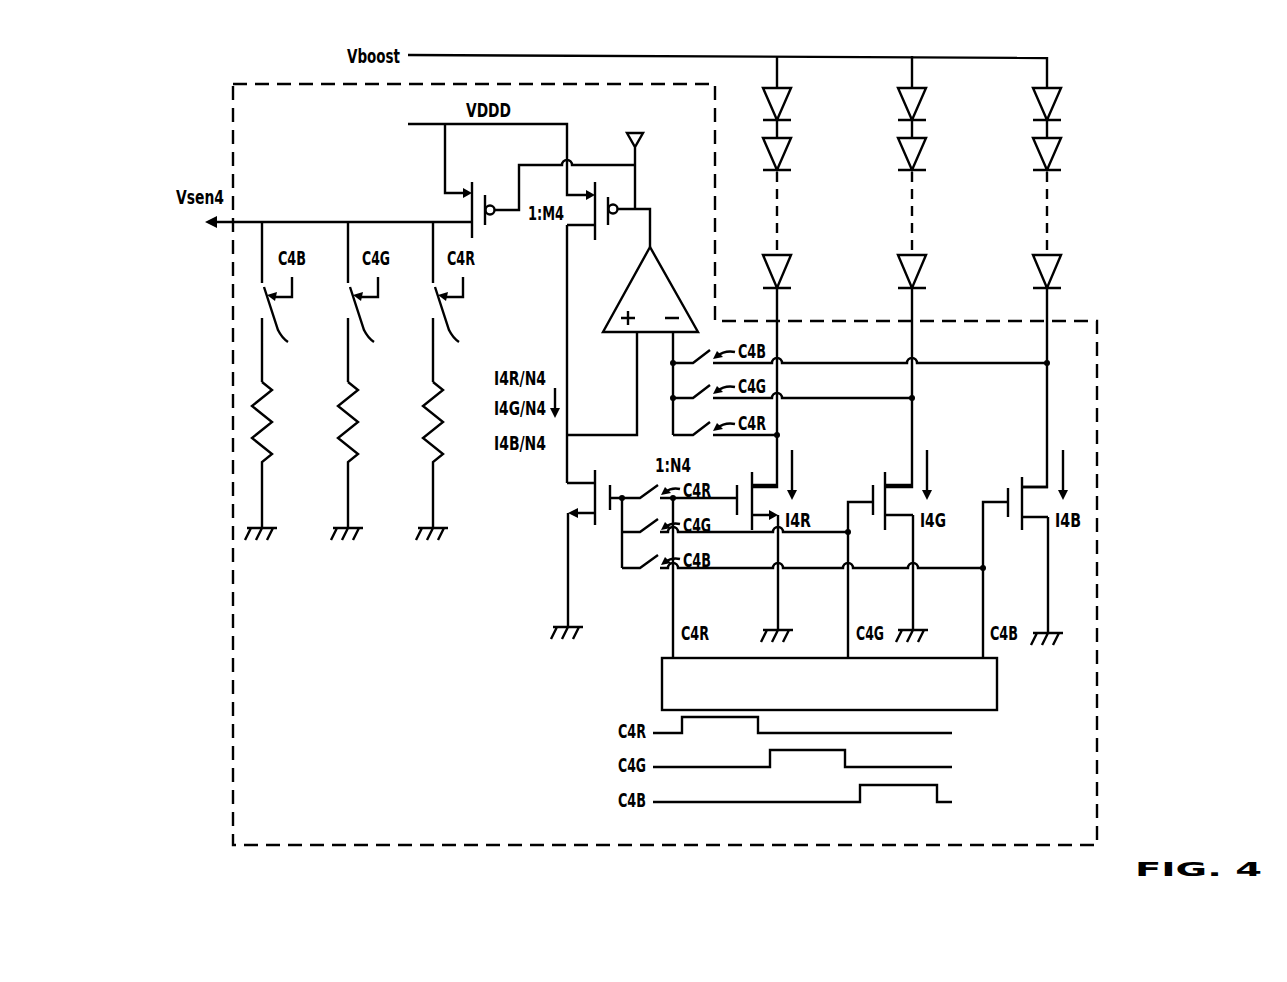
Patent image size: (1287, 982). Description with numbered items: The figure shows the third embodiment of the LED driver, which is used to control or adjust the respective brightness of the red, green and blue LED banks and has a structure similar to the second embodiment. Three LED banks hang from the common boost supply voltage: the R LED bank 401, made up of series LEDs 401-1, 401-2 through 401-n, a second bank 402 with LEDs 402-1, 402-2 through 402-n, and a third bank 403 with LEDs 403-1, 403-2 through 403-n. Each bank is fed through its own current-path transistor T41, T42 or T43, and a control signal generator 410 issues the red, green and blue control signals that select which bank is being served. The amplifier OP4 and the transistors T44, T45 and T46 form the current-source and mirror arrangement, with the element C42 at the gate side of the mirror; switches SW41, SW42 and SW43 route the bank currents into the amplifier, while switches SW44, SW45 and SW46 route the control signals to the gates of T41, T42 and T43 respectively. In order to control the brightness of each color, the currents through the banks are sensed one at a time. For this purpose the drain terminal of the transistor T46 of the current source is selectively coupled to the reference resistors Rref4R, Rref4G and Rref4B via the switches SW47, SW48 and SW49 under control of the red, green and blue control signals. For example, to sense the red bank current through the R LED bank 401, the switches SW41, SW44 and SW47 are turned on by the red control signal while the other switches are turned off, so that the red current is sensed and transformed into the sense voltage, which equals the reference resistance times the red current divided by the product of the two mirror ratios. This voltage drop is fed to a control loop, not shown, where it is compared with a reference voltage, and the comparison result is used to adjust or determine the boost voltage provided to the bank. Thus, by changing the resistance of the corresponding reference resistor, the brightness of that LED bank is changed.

The R LED bank 401 is at (826, 271).
The LED of first string 401-1 is at (804, 104).
The LED of first string 401-2 is at (804, 154).
The LED of first string 401-n is at (804, 271).
The second LED string (green) 402 is at (960, 271).
The LED of second string 402-1 is at (939, 104).
The LED of second string 402-2 is at (939, 154).
The LED of second string 402-n is at (939, 271).
The third LED string (blue) 403 is at (1097, 272).
The LED of third string 403-1 is at (1074, 104).
The LED of third string 403-2 is at (1074, 154).
The LED of third string 403-n is at (1074, 271).
The control signal generator 410 is at (997, 683).
The transistor T41 is at (764, 546).
The transistor T42 is at (899, 546).
The transistor T43 is at (1034, 548).
The transistor T44 is at (585, 554).
The transistor T45 is at (608, 332).
The transistor of the current source T46 is at (546, 199).
The operational amplifier OP4 is at (670, 280).
The capacitor C42 is at (634, 155).
The switch SW41 is at (696, 431).
The switch SW42 is at (696, 394).
The switch SW43 is at (696, 359).
The switch SW44 is at (644, 494).
The switch SW45 is at (644, 522).
The switch SW46 is at (644, 558).
The switch SW47 is at (455, 302).
The switch SW48 is at (370, 302).
The switch SW49 is at (284, 302).
The reference resistor Rref4B is at (281, 428).
The reference resistor Rref4G is at (367, 428).
The reference resistor Rref4R is at (452, 428).